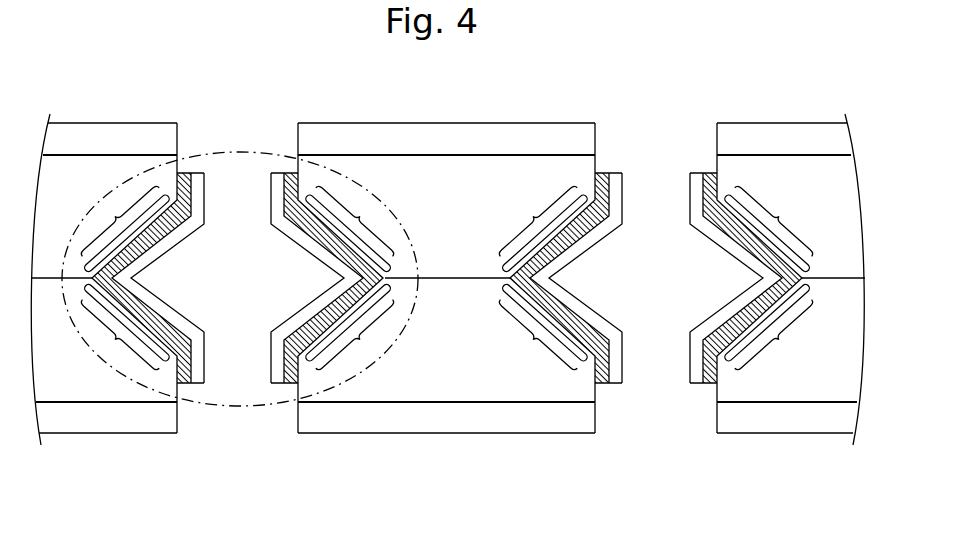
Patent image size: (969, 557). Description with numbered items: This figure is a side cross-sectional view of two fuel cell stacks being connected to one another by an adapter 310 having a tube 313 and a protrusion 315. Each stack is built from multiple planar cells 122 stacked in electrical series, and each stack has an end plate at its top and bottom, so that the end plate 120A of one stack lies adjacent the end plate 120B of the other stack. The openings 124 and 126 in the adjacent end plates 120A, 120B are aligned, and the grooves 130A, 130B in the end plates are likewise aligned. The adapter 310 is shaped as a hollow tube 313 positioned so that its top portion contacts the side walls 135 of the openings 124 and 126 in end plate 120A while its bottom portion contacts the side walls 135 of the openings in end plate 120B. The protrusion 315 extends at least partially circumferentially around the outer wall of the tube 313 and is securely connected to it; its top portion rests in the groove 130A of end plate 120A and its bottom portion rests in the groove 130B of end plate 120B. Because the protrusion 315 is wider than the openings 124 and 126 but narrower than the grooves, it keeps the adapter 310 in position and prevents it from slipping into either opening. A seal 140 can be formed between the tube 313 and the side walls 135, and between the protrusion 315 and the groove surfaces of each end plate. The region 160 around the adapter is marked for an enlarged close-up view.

The end plate 120A is at (80, 183).
The end plate 120B is at (105, 393).
The planar SOFC cell 122 is at (85, 140).
The opening 124 is at (670, 145).
The opening 126 is at (251, 145).
The groove 130A is at (445, 225).
The groove 130B is at (447, 331).
The side wall 135 is at (168, 184).
The seal 140 is at (762, 274).
The region 160 is at (405, 230).
The adapter 310 is at (252, 286).
The tube 313 is at (262, 201).
The protrusion 315 is at (297, 257).